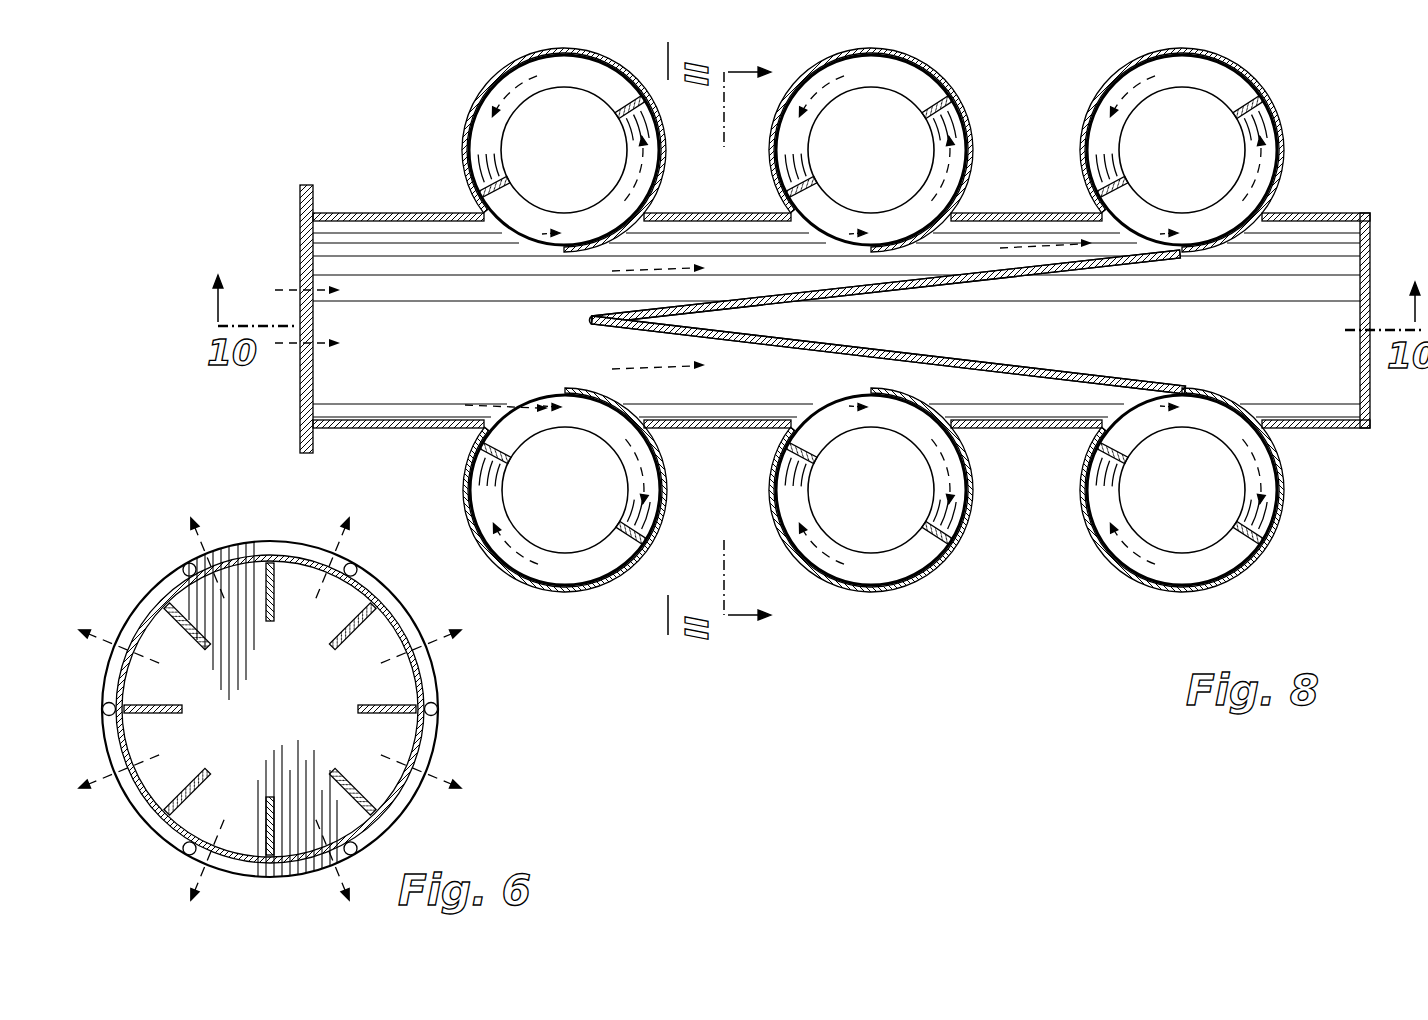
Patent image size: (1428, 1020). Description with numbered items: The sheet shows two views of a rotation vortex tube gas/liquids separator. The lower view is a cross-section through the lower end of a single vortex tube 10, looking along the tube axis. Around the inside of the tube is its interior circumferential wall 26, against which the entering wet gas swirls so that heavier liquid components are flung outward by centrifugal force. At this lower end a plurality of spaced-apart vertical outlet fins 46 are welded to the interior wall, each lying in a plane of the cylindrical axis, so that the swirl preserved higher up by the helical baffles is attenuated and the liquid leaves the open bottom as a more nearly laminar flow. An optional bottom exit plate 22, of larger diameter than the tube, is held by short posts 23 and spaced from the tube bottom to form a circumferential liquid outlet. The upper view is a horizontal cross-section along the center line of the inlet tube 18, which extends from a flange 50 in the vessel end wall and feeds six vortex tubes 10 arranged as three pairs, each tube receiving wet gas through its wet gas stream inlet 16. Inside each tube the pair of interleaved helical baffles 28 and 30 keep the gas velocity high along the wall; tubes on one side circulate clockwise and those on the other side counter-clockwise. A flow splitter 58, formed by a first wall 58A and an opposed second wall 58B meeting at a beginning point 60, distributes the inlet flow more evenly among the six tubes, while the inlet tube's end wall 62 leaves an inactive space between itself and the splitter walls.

In FIG. 8, the vortex tube 10 is at (520, 68).
In FIG. 6, the vortex tube 10 is at (418, 690).
In FIG. 8, the wet gas stream inlet 16 is at (555, 242).
In FIG. 8, the inlet tube 18 is at (1045, 211).
In FIG. 6, the bottom exit plate 22 is at (296, 712).
In FIG. 6, the short posts 23 is at (440, 713).
In FIG. 6, the interior circumferential wall 26 is at (150, 620).
In FIG. 8, the helical baffle 28 is at (491, 130).
In FIG. 8, the helical baffle 30 is at (648, 162).
In FIG. 6, the vertical outlet fins 46 is at (184, 713).
In FIG. 8, the flange 50 is at (311, 187).
In FIG. 8, the flow splitter 58 is at (846, 322).
In FIG. 8, the first wall 58A is at (1012, 365).
In FIG. 8, the second wall 58B is at (1012, 283).
In FIG. 8, the beginning point 60 is at (588, 320).
In FIG. 8, the end wall 62 is at (1372, 268).